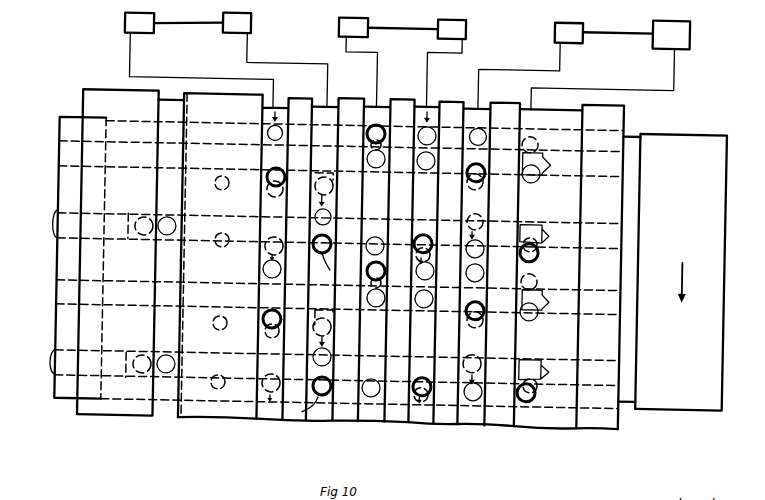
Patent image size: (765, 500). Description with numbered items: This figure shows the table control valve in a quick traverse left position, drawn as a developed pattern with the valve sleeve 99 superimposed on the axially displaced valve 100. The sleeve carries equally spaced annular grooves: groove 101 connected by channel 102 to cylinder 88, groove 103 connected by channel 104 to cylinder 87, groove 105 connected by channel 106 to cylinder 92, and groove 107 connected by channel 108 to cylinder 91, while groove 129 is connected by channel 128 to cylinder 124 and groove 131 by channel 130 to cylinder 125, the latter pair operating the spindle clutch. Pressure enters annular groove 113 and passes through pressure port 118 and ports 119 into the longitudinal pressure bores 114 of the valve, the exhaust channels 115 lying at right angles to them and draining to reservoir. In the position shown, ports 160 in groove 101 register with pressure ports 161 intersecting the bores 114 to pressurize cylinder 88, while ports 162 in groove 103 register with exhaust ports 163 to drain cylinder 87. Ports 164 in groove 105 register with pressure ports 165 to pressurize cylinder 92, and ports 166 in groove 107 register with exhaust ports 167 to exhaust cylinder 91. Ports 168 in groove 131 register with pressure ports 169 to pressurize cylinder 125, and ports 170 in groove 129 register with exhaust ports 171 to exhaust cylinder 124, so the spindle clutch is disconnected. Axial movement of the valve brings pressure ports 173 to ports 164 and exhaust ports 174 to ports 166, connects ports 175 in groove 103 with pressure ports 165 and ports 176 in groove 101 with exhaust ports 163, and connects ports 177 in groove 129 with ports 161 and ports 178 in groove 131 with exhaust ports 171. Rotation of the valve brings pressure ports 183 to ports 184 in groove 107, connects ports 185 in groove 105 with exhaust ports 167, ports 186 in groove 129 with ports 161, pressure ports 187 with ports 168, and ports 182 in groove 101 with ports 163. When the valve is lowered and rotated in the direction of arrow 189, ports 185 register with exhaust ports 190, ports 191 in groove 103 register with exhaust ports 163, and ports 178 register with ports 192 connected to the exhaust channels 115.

The cylinder 87 is at (358, 22).
The cylinder 88 is at (457, 21).
The cylinder 91 is at (144, 22).
The cylinder 92 is at (238, 21).
The cylinder 124 is at (558, 20).
The cylinder 125 is at (662, 17).
The valve sleeve 99 is at (81, 414).
The valve 100 is at (672, 134).
The annular groove 101 is at (423, 420).
The channel 102 is at (424, 84).
The annular groove 103 is at (368, 420).
The channel 104 is at (374, 79).
The annular groove 105 is at (321, 420).
The channel 106 is at (324, 86).
The annular groove 107 is at (265, 421).
The channel 108 is at (174, 82).
The annular groove 113 is at (170, 419).
The pressure bores 114 is at (532, 229).
The exhaust channels 115 is at (546, 161).
The pressure port 118 is at (174, 220).
The ports 119 is at (142, 242).
The channel 128 is at (475, 85).
The groove 129 is at (480, 420).
The channel 130 is at (589, 86).
The groove 131 is at (556, 418).
The ports 160 is at (431, 255).
The pressure ports 161 is at (424, 233).
The ports 162 is at (364, 126).
The exhaust ports 163 is at (366, 146).
The ports 164 is at (308, 338).
The pressure ports 165 is at (332, 239).
The ports 166 is at (264, 174).
The exhaust ports 167 is at (277, 199).
The ports 168 is at (540, 253).
The pressure ports 169 is at (538, 242).
The ports 170 is at (483, 168).
The exhaust ports 171 is at (482, 185).
The pressure ports 173 is at (283, 251).
The exhaust ports 174 is at (225, 195).
The ports 175 is at (380, 238).
The ports 176 is at (430, 127).
The ports 177 is at (485, 251).
The ports 178 is at (538, 177).
The ports 182 is at (433, 159).
The pressure ports 183 is at (226, 246).
The ports 184 is at (265, 136).
The ports 185 is at (331, 213).
The ports 186 is at (484, 137).
The pressure ports 187 is at (481, 214).
The arrow 189 is at (686, 259).
The exhaust ports 190 is at (332, 187).
The ports 191 is at (363, 161).
The ports 192 is at (536, 139).